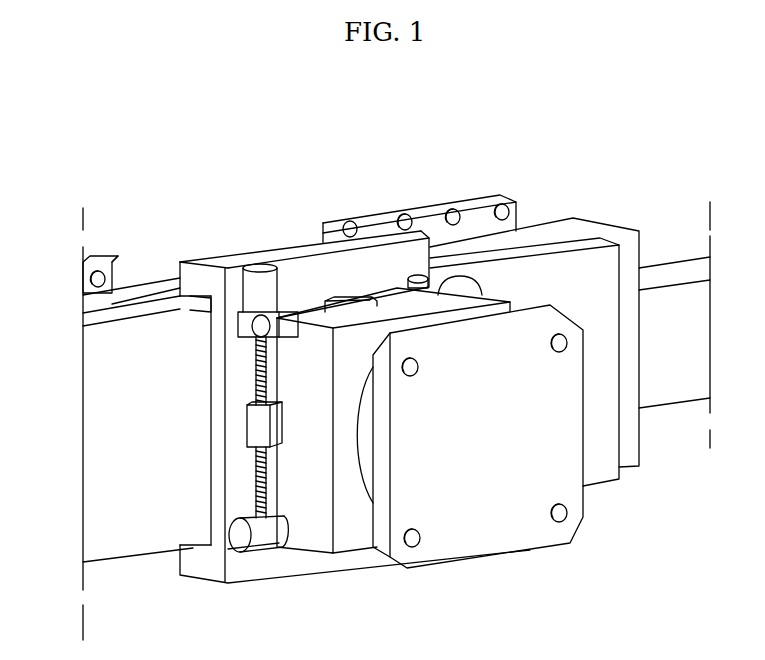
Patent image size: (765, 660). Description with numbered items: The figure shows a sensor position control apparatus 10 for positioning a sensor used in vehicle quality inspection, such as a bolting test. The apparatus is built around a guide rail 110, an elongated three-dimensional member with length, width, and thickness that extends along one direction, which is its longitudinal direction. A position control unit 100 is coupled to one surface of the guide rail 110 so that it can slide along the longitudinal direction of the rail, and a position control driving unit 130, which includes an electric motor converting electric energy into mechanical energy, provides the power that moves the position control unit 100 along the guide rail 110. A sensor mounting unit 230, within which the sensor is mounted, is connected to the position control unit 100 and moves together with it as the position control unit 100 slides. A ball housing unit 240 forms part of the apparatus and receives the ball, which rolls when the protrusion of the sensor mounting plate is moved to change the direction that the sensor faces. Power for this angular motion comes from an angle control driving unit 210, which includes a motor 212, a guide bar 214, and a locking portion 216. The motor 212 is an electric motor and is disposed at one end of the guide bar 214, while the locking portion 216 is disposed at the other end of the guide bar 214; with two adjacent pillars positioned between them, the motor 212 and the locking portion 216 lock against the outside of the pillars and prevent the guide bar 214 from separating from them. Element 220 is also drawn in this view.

The sensor position control apparatus 10 is at (610, 170).
The position control unit 100 is at (240, 478).
The guide rail 110 is at (145, 343).
The position control driving unit 130 is at (673, 297).
The angle control driving unit 210 is at (353, 153).
The motor 212 is at (261, 267).
The guide bar 214 is at (253, 355).
The locking portion 216 is at (418, 277).
The moving block 220 is at (253, 425).
The sensor mounting unit 230 is at (483, 543).
The ball housing unit 240 is at (317, 543).